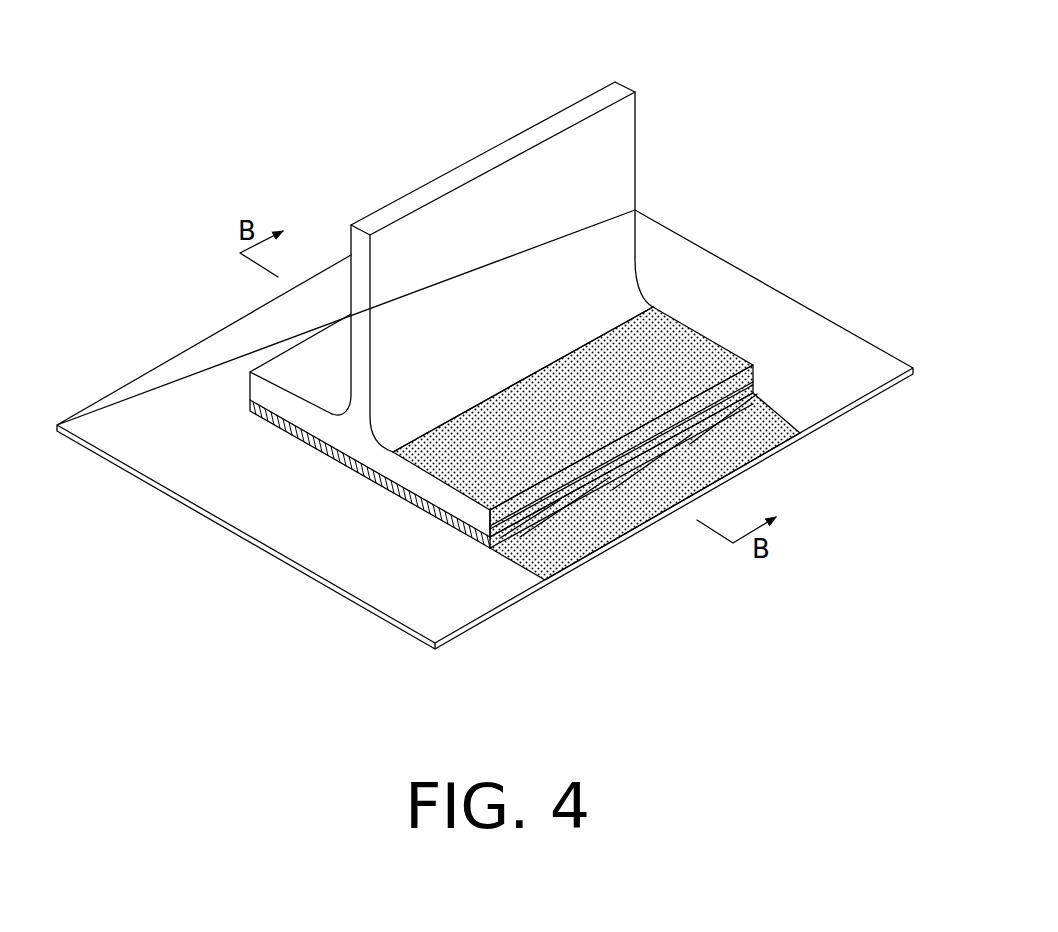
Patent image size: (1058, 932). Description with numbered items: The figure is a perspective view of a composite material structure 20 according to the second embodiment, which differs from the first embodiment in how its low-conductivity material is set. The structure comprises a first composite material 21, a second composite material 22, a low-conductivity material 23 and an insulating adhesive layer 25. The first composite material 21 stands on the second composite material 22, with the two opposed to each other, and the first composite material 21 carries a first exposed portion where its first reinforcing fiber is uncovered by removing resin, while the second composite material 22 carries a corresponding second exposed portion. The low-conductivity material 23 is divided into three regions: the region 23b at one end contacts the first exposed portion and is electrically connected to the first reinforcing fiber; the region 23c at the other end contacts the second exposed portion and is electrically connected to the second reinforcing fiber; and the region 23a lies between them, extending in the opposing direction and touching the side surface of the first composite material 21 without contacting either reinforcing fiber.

The composite material structure 20 is at (699, 73).
The first composite material 21 is at (620, 178).
The second composite material 22 is at (770, 318).
The low-conductivity material 23 is at (596, 453).
The region 23a is at (755, 392).
The region 23b is at (474, 482).
The region 23c is at (592, 530).
The insulating adhesive layer 25 is at (391, 494).